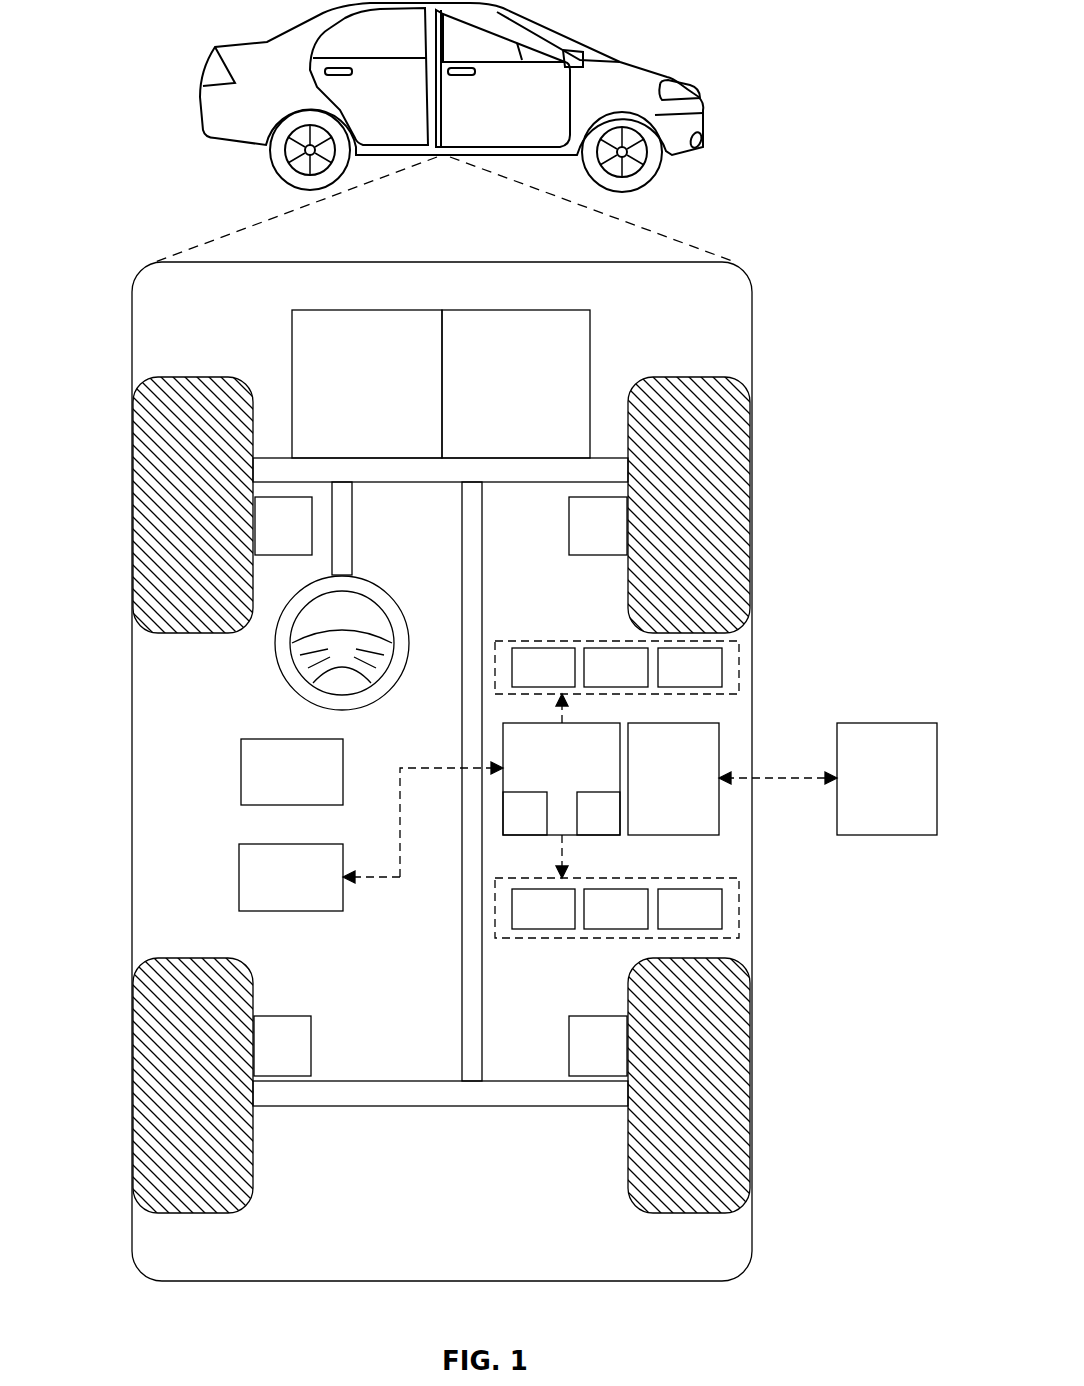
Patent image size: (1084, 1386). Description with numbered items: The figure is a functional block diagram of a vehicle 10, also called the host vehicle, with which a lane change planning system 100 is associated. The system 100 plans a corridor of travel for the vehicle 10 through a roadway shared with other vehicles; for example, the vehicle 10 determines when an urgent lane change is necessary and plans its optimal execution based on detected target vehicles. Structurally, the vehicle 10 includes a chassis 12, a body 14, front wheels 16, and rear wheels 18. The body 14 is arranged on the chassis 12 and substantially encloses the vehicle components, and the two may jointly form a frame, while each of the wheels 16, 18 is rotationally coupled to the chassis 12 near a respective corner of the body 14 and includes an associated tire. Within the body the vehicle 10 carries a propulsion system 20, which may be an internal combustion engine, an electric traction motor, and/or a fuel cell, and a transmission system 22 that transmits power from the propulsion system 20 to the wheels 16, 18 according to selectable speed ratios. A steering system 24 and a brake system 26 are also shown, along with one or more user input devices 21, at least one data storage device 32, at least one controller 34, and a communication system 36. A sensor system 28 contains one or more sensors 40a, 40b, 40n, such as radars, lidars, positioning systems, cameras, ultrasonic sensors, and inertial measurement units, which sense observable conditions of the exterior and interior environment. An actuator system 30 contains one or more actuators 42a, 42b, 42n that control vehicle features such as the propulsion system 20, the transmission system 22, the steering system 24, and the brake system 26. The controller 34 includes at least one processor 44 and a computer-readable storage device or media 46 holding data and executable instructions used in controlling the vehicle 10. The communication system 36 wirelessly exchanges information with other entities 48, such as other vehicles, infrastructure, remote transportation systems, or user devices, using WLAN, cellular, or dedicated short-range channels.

The vehicle 10 is at (212, 78).
The lane change planning system 100 is at (775, 276).
The chassis 12 is at (460, 993).
The body 14 is at (131, 733).
The front wheels 16 is at (204, 377).
The rear wheels 18 is at (198, 1213).
The propulsion system 20 is at (367, 384).
The transmission system 22 is at (516, 384).
The steering system 24 is at (352, 500).
The brake system 26 is at (440, 786).
The sensor system 28 is at (617, 652).
The actuator system 30 is at (617, 927).
The user input devices 21 is at (292, 772).
The data storage device 32 is at (291, 877).
The controller 34 is at (561, 779).
The communication system 36 is at (673, 779).
The sensor 40a is at (543, 667).
The sensor 40b is at (616, 667).
The sensor 40n is at (690, 667).
The actuator 42a is at (543, 909).
The actuator 42b is at (616, 909).
The actuator 42n is at (690, 909).
The processor 44 is at (525, 813).
The computer-readable storage device or media 46 is at (598, 813).
The other entities 48 is at (887, 779).